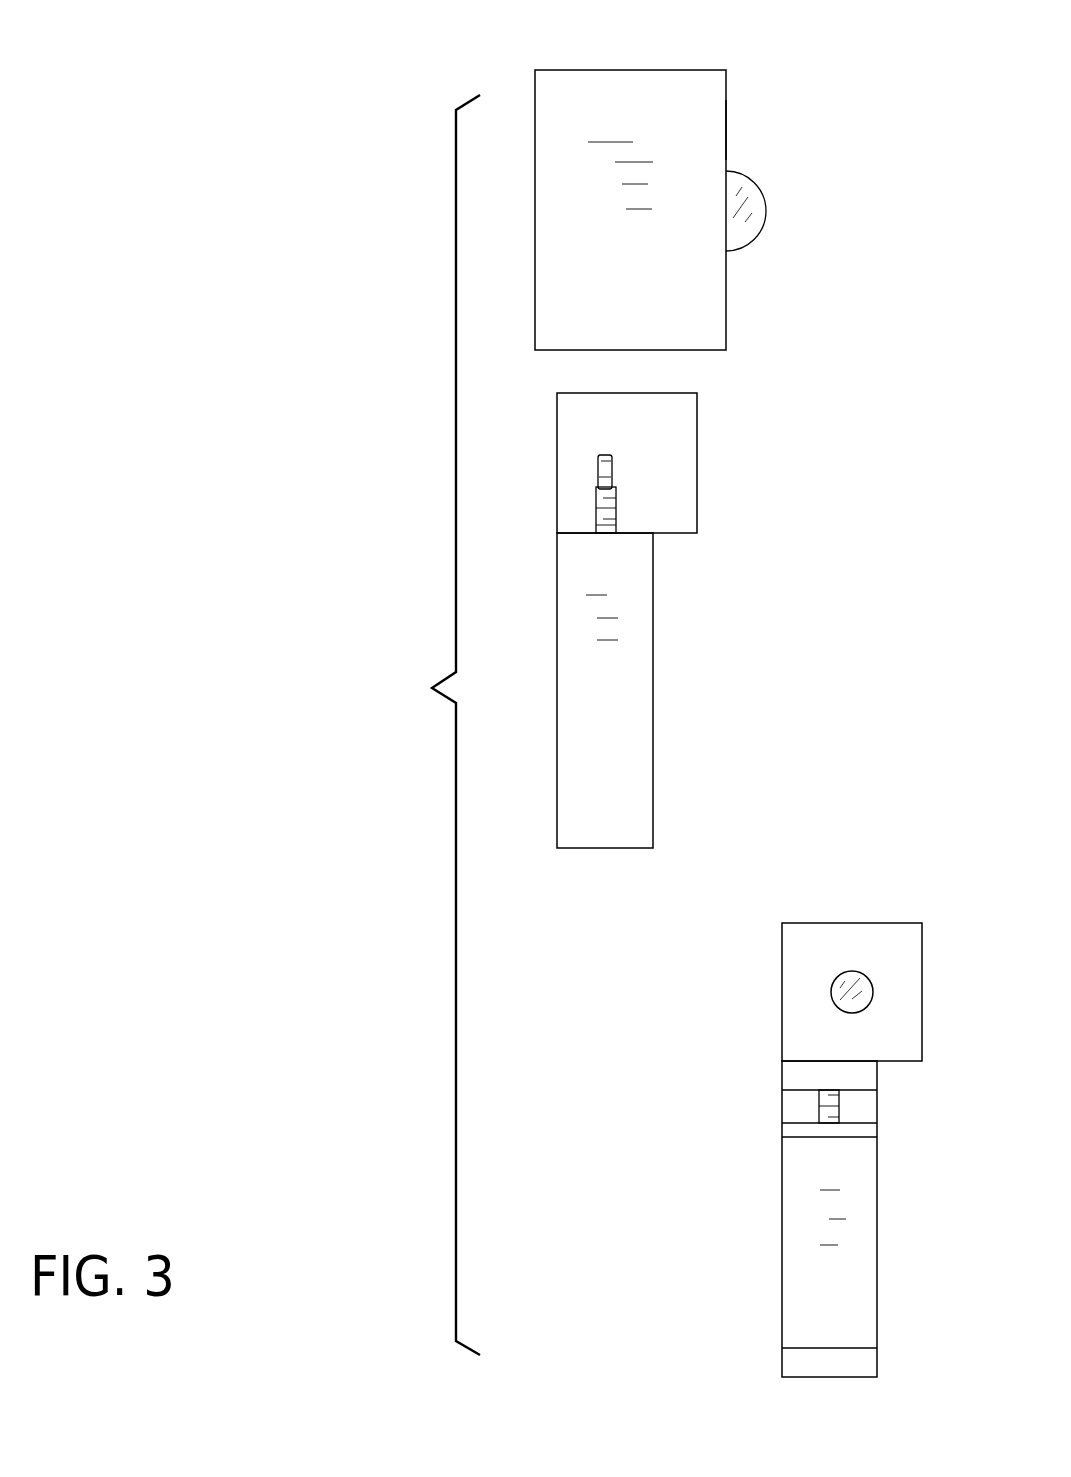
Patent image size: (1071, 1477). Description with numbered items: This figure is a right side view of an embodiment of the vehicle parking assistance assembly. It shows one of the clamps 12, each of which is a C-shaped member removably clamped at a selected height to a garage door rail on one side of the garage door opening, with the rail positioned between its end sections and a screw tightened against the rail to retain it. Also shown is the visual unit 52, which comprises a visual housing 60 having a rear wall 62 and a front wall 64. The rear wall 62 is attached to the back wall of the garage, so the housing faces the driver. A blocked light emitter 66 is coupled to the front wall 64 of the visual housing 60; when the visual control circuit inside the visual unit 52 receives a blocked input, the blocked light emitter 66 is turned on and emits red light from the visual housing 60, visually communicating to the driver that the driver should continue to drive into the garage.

The clamps 12 is at (745, 541).
The visual unit 52 is at (812, 74).
The visual housing 60 is at (582, 70).
The rear wall 62 is at (537, 145).
The front wall 64 is at (730, 128).
The blocked light emitter 66 is at (763, 219).